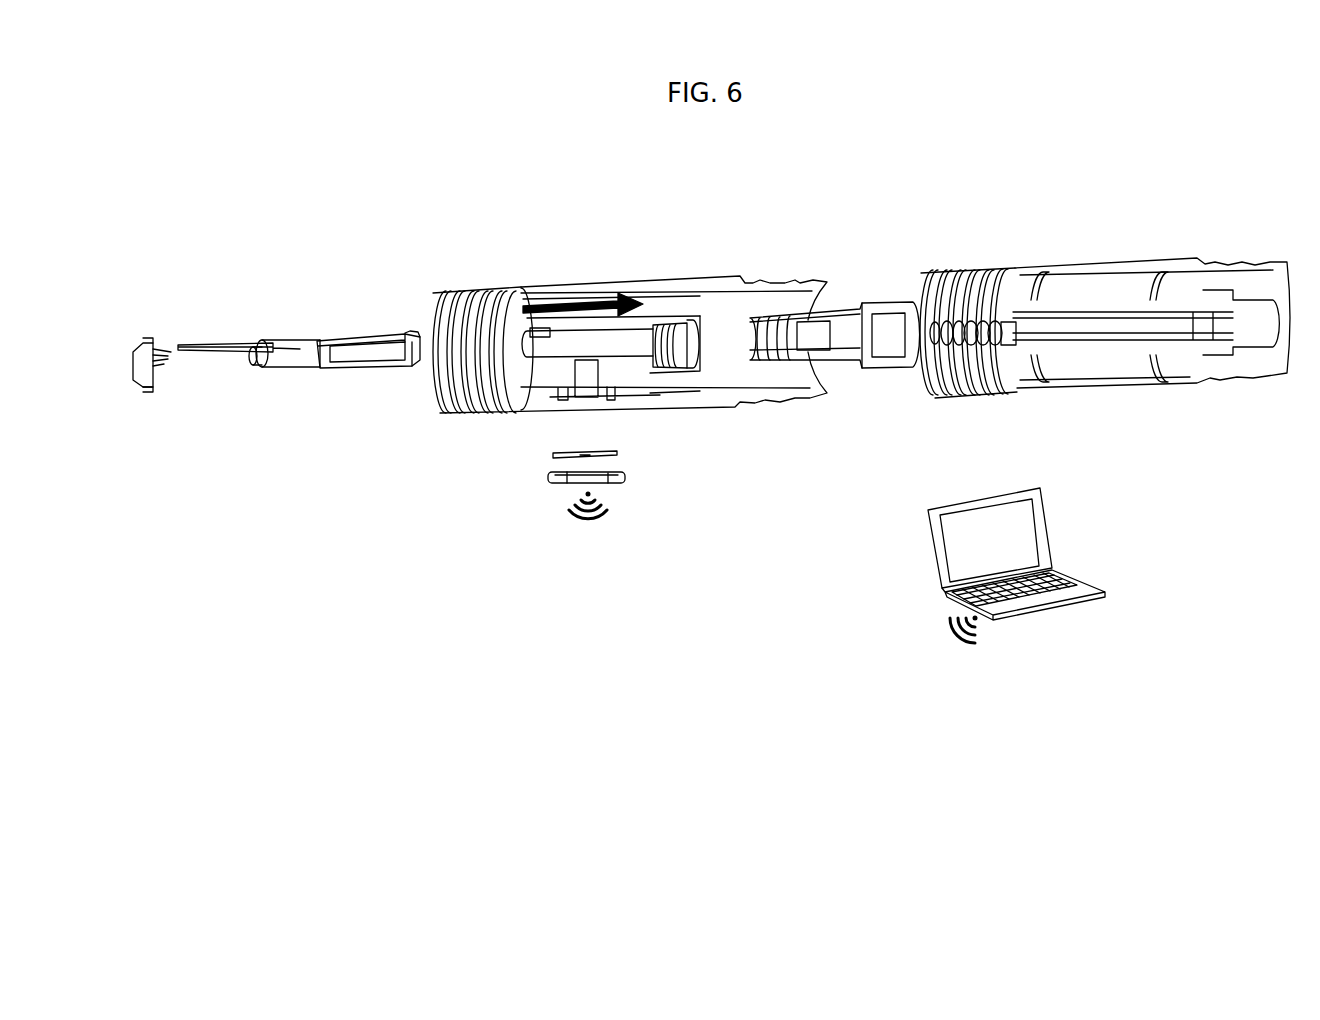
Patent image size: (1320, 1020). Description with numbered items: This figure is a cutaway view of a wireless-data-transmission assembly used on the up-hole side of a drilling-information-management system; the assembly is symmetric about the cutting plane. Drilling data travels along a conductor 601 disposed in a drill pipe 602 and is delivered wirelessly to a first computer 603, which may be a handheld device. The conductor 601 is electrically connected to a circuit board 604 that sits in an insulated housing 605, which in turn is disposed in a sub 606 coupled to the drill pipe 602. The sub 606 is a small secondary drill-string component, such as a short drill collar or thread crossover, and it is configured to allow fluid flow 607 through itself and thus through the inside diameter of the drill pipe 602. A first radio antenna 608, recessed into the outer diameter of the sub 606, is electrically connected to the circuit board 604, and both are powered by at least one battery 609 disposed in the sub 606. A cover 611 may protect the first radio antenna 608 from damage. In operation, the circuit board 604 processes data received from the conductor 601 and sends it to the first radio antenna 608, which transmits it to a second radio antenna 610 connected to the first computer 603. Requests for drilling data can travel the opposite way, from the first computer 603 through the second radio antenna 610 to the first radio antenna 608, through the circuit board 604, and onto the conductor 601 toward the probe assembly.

The conductor 601 is at (807, 330).
The drill pipe 602 is at (1137, 383).
The first computer 603 is at (937, 535).
The circuit board 604 is at (212, 348).
The insulated housing 605 is at (140, 337).
The sub 606 is at (720, 403).
The fluid flow 607 is at (583, 292).
The first radio antenna 608 is at (613, 453).
The battery 609 is at (303, 363).
The second radio antenna 610 is at (963, 610).
The cover 611 is at (553, 480).